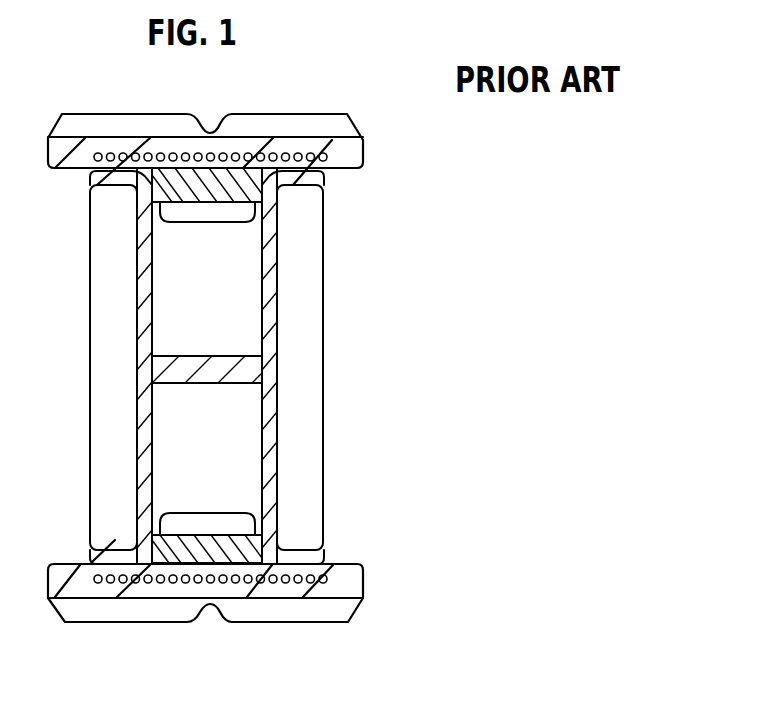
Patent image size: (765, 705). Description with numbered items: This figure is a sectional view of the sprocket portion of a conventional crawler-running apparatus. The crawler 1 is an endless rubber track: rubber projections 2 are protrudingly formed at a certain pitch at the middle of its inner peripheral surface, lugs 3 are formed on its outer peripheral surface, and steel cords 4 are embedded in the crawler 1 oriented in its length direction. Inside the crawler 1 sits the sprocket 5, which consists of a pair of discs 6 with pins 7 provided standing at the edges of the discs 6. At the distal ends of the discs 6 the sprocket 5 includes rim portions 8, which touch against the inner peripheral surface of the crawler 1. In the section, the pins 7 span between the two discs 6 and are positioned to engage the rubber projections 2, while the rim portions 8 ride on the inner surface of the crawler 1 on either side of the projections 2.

The crawler 1 is at (82, 158).
The rubber projections 2 is at (222, 210).
The lugs 3 is at (137, 127).
The steel cords 4 is at (260, 160).
The sprocket 5 is at (86, 376).
The discs 6 is at (145, 290).
The pins 7 is at (200, 172).
The rim portions 8 is at (303, 168).